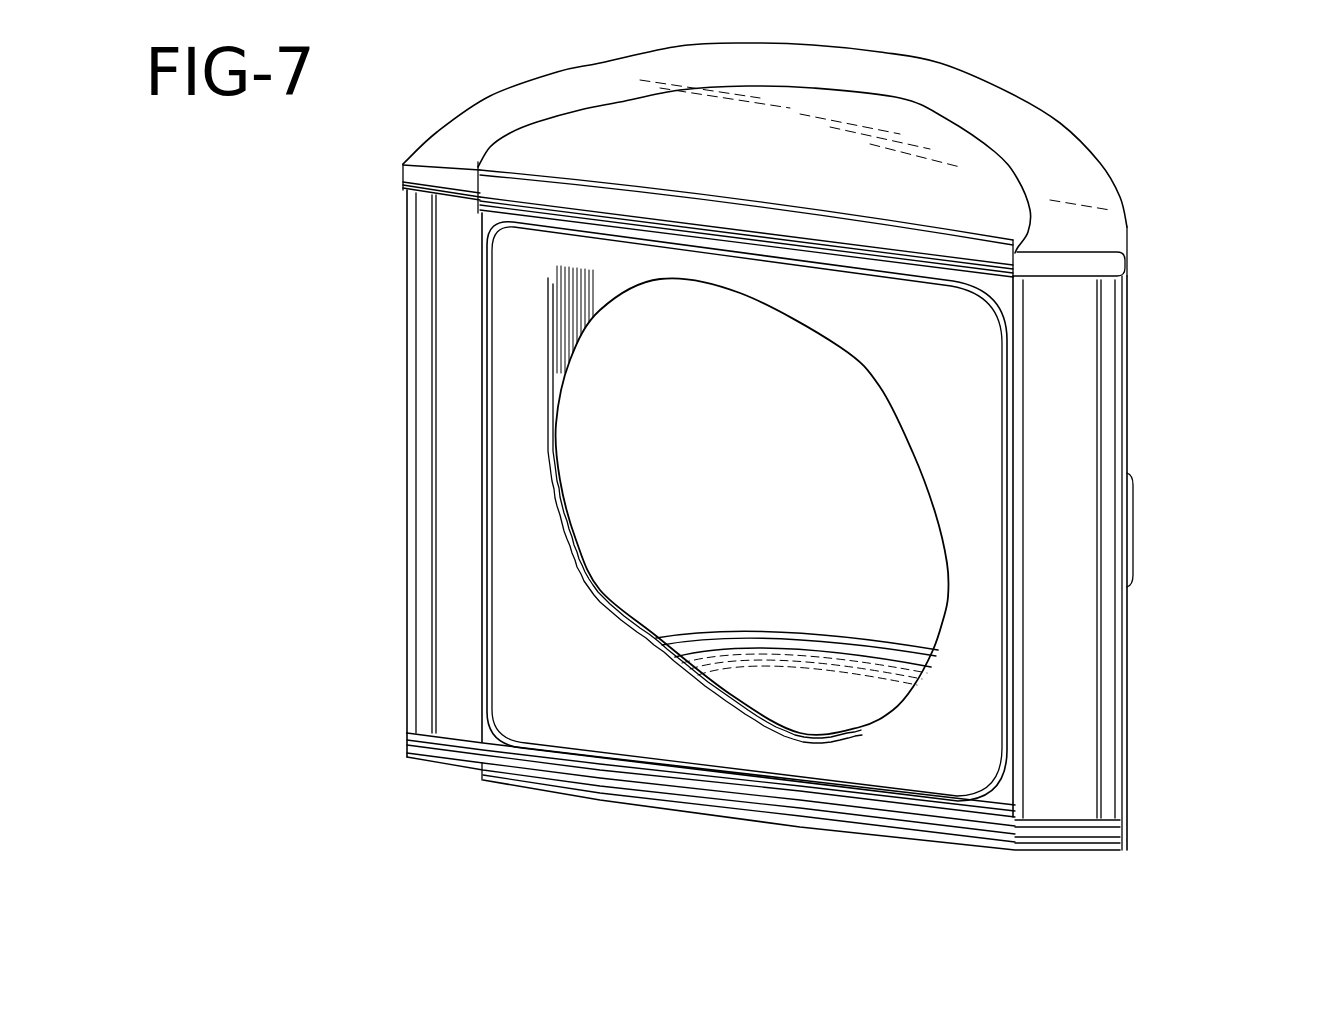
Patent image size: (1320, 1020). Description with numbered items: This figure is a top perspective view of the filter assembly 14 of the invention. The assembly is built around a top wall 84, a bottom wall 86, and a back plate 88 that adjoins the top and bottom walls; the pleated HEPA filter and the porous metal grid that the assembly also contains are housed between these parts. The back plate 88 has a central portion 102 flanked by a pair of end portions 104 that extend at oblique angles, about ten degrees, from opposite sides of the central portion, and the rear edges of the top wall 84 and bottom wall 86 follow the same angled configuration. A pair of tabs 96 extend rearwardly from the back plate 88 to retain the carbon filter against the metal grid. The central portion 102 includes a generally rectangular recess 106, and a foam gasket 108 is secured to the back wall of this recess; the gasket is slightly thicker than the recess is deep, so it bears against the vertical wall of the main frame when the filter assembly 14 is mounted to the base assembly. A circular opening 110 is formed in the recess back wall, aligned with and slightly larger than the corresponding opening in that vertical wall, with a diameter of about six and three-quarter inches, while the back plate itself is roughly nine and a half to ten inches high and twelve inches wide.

The filter assembly 14 is at (388, 242).
The top wall 84 is at (1026, 78).
The bottom wall 86 is at (447, 762).
The back plate 88 is at (440, 496).
The tabs 96 is at (1128, 514).
The central portion 102 is at (1000, 803).
The end portions 104 is at (450, 676).
The recess 106 is at (574, 288).
The foam gasket 108 is at (522, 612).
The circular opening 110 is at (552, 407).